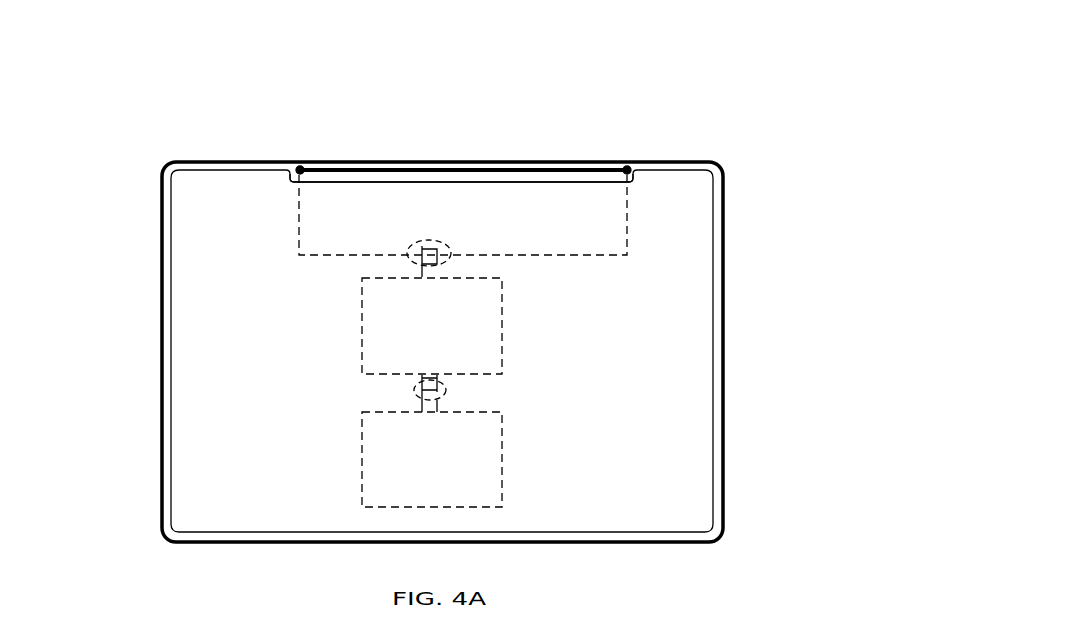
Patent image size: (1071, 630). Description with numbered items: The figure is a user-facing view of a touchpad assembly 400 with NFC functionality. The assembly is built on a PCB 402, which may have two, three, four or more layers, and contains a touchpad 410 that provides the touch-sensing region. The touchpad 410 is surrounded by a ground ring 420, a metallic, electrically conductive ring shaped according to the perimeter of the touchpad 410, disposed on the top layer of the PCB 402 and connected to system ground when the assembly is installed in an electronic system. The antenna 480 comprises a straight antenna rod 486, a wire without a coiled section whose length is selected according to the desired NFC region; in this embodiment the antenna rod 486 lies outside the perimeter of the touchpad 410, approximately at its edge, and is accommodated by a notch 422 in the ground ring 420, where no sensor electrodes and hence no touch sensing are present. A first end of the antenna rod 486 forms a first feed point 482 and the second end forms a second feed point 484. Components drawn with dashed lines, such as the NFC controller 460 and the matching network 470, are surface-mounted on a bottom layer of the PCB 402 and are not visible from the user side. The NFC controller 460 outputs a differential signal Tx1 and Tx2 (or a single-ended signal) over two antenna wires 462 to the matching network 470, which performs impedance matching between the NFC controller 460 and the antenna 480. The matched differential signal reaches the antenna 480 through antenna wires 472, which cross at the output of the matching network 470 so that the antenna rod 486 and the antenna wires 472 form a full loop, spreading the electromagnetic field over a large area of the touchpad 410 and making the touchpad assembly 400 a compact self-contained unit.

The touchpad assembly 400 is at (545, 63).
The PCB 402 is at (162, 463).
The touchpad 410 is at (270, 373).
The ground ring 420 is at (716, 502).
The notch 422 is at (602, 183).
The NFC controller 460 is at (416, 492).
The antenna wires 462 is at (445, 386).
The matching network 470 is at (416, 359).
The antenna wires 472 is at (446, 252).
The antenna 480 is at (630, 165).
The first feed point 482 is at (298, 168).
The second feed point 484 is at (629, 168).
The antenna rod 486 is at (343, 172).